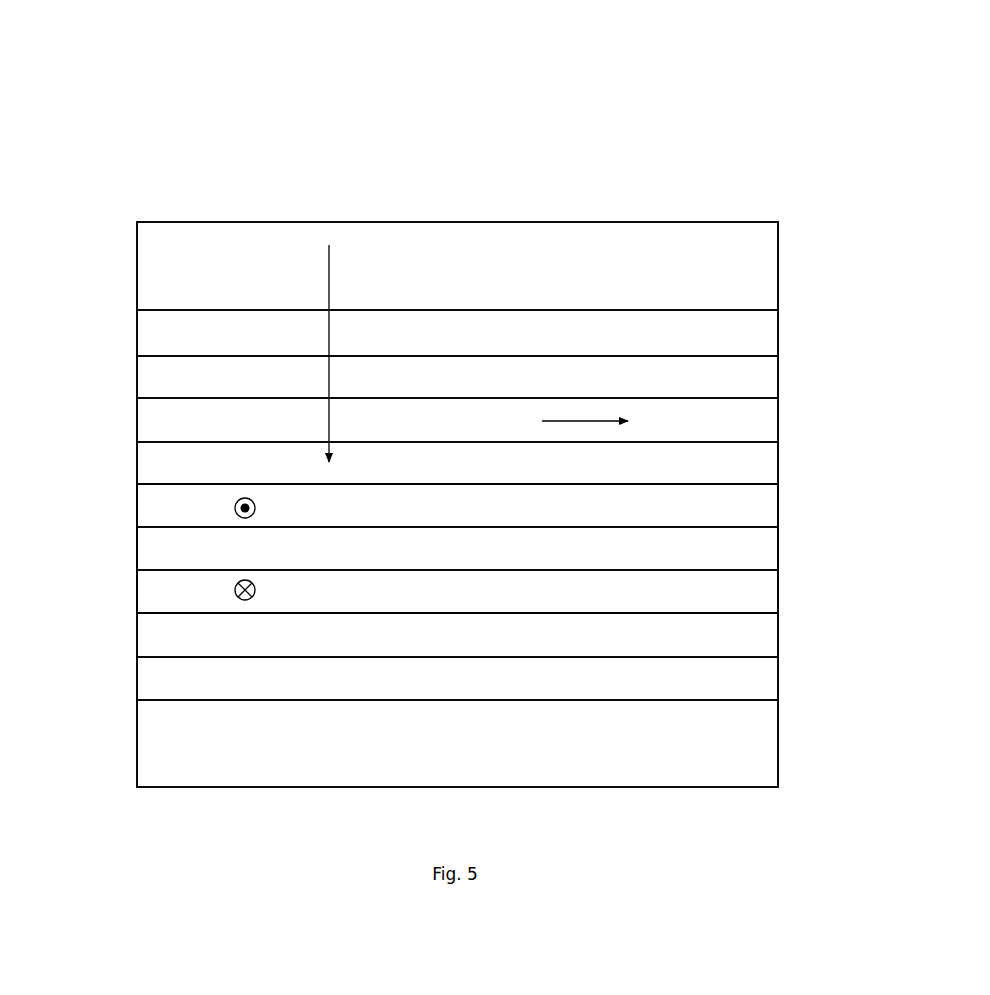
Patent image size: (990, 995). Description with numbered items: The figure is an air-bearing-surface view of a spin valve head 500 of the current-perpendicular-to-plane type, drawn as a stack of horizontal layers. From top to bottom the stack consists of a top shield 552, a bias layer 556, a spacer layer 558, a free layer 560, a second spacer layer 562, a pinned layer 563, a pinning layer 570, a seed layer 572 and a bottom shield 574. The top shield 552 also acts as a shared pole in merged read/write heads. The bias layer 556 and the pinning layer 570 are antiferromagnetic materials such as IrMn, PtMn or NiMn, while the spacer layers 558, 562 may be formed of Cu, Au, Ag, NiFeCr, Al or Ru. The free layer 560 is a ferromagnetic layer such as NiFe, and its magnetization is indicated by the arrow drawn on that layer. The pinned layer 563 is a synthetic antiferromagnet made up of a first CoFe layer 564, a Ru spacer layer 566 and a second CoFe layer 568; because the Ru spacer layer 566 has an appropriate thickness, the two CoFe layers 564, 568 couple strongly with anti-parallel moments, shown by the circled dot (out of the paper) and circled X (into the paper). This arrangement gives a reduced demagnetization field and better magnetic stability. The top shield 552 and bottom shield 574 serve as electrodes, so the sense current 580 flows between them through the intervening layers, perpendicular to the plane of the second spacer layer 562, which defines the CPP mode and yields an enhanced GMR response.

The spin valve head 500 is at (124, 142).
The top shield 552 is at (778, 291).
The bias layer 556 is at (778, 345).
The spacer layer 558 is at (778, 377).
The free layer 560 is at (778, 420).
The second spacer layer 562 is at (778, 463).
The pinned layer 563 is at (798, 613).
The first CoFe layer 564 is at (457, 505).
The Ru spacer layer 566 is at (457, 548).
The second CoFe layer 568 is at (457, 591).
The pinning layer 570 is at (778, 636).
The seed layer 572 is at (778, 690).
The bottom shield 574 is at (778, 735).
The sense current 580 is at (329, 288).